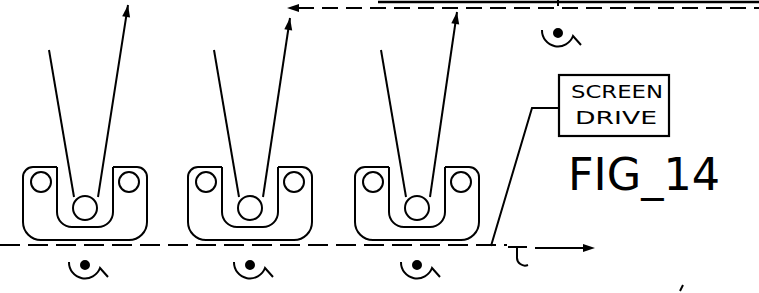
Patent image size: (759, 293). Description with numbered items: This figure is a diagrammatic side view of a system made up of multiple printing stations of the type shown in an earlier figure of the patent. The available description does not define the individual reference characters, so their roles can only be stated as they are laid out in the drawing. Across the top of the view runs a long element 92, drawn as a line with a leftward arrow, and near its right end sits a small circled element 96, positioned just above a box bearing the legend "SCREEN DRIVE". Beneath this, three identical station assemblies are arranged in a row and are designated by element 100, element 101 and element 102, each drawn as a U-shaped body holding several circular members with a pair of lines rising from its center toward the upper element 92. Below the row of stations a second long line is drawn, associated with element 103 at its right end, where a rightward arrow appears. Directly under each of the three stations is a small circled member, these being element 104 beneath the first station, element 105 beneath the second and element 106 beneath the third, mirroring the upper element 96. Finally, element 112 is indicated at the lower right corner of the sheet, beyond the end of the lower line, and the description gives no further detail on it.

The screen 92 is at (523, 22).
The screen drive roller 96 is at (581, 51).
The strand guide 100 is at (133, 146).
The strand guide 101 is at (297, 146).
The strand guide 102 is at (462, 146).
The conveyor 103 is at (551, 264).
The feed roller 104 is at (109, 274).
The feed roller 105 is at (275, 274).
The feed roller 106 is at (441, 274).
The conveyor element 112 is at (703, 283).